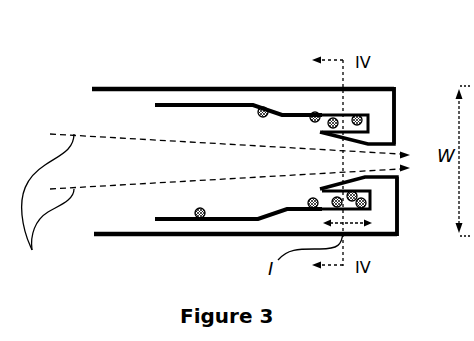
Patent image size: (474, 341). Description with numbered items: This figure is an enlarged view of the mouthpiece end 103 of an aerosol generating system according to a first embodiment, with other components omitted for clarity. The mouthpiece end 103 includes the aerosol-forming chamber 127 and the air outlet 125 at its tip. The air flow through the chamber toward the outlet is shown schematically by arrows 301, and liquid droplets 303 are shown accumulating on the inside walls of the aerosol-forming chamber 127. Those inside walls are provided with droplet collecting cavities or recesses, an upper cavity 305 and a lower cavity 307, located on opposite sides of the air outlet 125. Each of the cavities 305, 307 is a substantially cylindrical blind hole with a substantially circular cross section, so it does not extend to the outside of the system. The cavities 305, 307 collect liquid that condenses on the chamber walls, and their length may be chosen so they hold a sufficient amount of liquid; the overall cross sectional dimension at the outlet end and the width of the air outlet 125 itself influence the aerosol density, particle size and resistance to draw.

The mouthpiece end 103 is at (95, 70).
The air outlet 125 is at (413, 135).
The aerosol-forming chamber 127 is at (138, 158).
The arrows 301 is at (212, 205).
The liquid droplets 303 is at (313, 113).
The upper cavity 305 is at (366, 114).
The lower cavity 307 is at (370, 209).